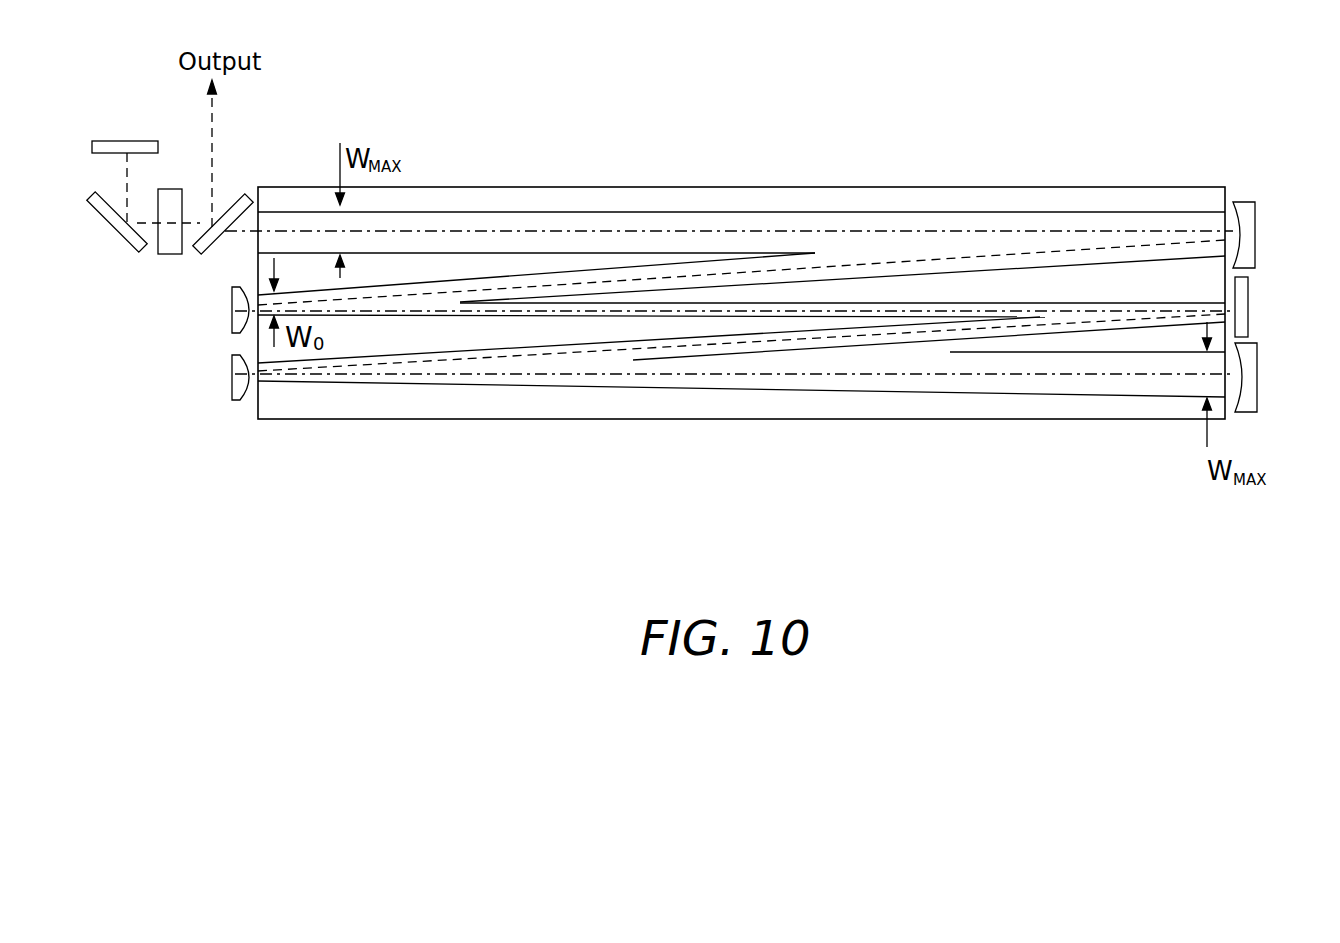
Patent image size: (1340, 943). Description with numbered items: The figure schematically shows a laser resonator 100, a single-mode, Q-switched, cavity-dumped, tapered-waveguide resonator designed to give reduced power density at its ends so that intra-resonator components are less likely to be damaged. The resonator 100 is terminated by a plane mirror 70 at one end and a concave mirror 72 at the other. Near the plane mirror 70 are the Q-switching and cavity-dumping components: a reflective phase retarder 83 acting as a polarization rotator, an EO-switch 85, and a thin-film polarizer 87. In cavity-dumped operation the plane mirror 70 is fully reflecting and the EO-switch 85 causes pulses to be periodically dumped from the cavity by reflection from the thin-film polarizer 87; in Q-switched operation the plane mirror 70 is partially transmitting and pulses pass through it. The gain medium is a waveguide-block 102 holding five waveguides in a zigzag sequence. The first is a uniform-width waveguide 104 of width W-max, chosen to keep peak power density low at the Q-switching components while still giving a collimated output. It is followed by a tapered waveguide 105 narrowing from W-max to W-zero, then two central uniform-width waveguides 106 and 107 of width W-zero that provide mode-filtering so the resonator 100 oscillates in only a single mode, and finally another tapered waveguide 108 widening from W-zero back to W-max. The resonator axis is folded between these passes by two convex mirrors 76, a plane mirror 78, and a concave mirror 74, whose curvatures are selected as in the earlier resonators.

The laser resonator 100 is at (908, 537).
The waveguide-block 102 is at (492, 420).
The uniform-width waveguide 104 is at (603, 212).
The tapered waveguide 105 is at (458, 283).
The uniform-width waveguide 106 is at (947, 303).
The uniform-width waveguide 107 is at (951, 347).
The tapered waveguide 108 is at (653, 390).
The plane mirror 70 is at (120, 141).
The concave mirror 72 is at (1253, 392).
The concave mirror 74 is at (1250, 245).
The convex mirrors 76 is at (232, 312).
The plane mirror 78 is at (1242, 305).
The reflective phase retarder 83 is at (110, 220).
The EO-switch 85 is at (168, 247).
The thin-film polarizer 87 is at (243, 197).